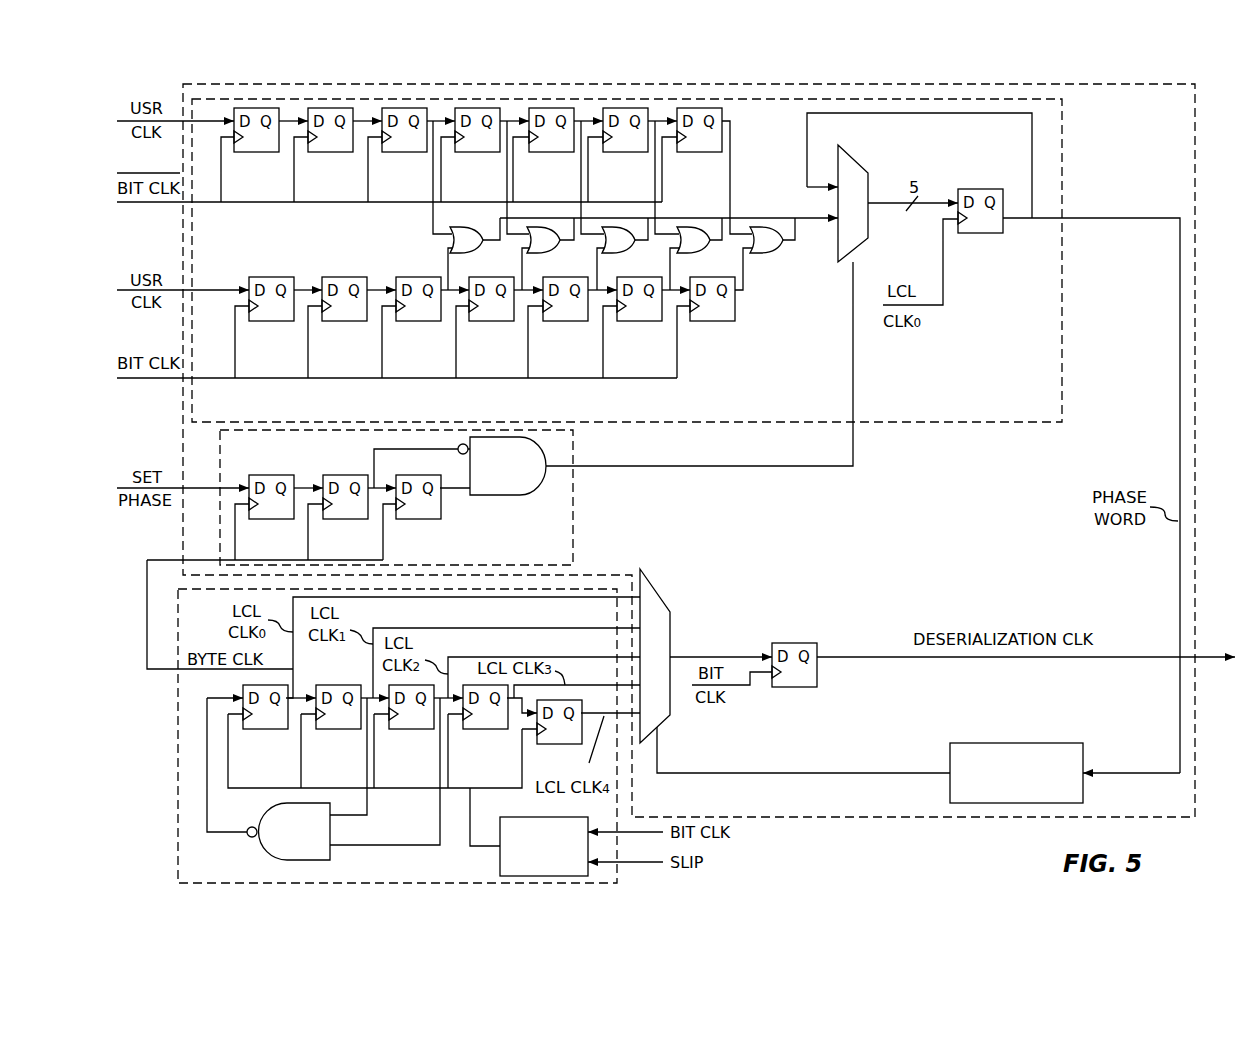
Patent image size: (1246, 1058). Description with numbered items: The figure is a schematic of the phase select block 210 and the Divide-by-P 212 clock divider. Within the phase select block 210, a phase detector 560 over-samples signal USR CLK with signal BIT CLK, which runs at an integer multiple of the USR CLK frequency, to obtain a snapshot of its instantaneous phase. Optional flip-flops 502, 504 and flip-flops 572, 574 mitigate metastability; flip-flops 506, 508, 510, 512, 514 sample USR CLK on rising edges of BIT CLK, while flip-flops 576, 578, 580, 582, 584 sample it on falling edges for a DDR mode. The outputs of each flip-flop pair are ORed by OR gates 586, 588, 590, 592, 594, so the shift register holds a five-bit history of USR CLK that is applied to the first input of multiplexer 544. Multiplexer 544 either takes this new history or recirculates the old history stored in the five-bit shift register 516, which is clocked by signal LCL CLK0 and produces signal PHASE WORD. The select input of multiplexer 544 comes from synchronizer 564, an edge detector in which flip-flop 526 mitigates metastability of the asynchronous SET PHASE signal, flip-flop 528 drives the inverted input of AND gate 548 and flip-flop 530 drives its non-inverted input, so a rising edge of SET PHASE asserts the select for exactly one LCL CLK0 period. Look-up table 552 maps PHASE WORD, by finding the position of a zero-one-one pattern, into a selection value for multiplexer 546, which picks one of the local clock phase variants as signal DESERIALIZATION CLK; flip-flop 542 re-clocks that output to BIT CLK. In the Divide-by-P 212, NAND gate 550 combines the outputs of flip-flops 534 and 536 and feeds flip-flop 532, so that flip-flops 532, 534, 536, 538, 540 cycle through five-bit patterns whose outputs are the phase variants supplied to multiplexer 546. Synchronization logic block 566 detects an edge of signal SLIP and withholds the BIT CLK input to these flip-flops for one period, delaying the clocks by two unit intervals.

The phase select block 210 is at (913, 817).
The Divide-by-P 212 is at (177, 683).
The flip-flop 502 is at (289, 322).
The flip-flop 504 is at (362, 322).
The flip-flop 506 is at (436, 322).
The flip-flop 508 is at (509, 322).
The flip-flop 510 is at (583, 322).
The flip-flop 512 is at (657, 322).
The flip-flop 514 is at (730, 322).
The 5-bit shift register 516 is at (996, 234).
The flip-flop 526 is at (289, 520).
The flip-flop 528 is at (363, 520).
The flip-flop 530 is at (436, 520).
The flip-flop 532 is at (283, 730).
The flip-flop 534 is at (356, 730).
The flip-flop 536 is at (429, 730).
The flip-flop 538 is at (503, 730).
The flip-flop 540 is at (577, 745).
The flip-flop 542 is at (812, 688).
The multiplexer 544 is at (869, 197).
The multiplexer 546 is at (672, 617).
The AND gate 548 is at (505, 496).
The NAND gate 550 is at (333, 832).
The look-up table 552 is at (1053, 743).
The phase detector 560 is at (1062, 407).
The synchronizer 564 is at (575, 480).
The synchronization logic block 566 is at (550, 817).
The flip-flop 572 is at (274, 153).
The flip-flop 574 is at (348, 153).
The flip-flop 576 is at (422, 153).
The flip-flop 578 is at (495, 153).
The flip-flop 580 is at (569, 153).
The flip-flop 582 is at (643, 153).
The flip-flop 584 is at (717, 153).
The OR gate 586 is at (472, 253).
The OR gate 588 is at (549, 253).
The OR gate 590 is at (624, 253).
The OR gate 592 is at (699, 253).
The OR gate 594 is at (772, 253).